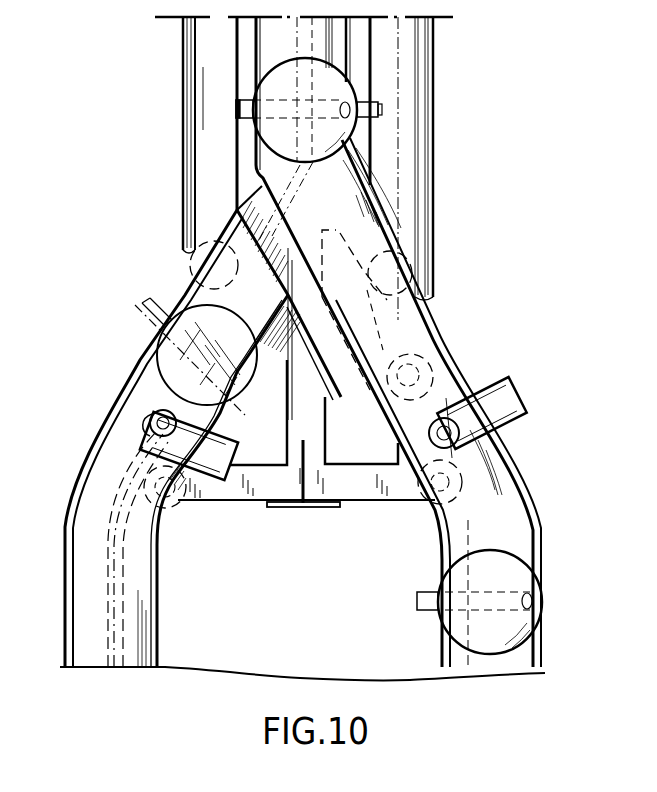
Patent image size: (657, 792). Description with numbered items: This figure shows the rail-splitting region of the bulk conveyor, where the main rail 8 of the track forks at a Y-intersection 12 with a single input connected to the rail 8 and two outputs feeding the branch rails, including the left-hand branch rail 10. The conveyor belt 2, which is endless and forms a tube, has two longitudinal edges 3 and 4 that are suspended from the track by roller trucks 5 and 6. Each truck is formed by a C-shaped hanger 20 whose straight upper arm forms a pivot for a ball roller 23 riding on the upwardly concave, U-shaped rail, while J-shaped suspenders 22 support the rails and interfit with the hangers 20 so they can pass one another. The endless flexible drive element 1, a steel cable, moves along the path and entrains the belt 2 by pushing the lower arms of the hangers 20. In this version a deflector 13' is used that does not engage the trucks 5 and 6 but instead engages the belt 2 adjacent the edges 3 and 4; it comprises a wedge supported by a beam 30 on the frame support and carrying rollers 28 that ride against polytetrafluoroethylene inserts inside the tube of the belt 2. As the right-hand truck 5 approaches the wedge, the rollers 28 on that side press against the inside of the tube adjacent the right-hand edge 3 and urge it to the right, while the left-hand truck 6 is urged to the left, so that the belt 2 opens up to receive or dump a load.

The endless flexible drive element 1 is at (283, 172).
The conveyor belt 2 is at (413, 132).
The longitudinal edge 3 is at (236, 27).
The longitudinal edge 4 is at (373, 43).
The roller truck 5 is at (132, 339).
The roller truck 6 is at (225, 128).
The main rail 8 is at (150, 390).
The branch rail 10 is at (363, 324).
The Y-intersection 12 is at (398, 207).
The deflector 13' is at (227, 481).
The C-shaped hanger 20 is at (282, 43).
The J-shaped suspender 22 is at (140, 422).
The ball roller 23 is at (333, 90).
The roller 28 is at (190, 248).
The beam 30 is at (330, 508).